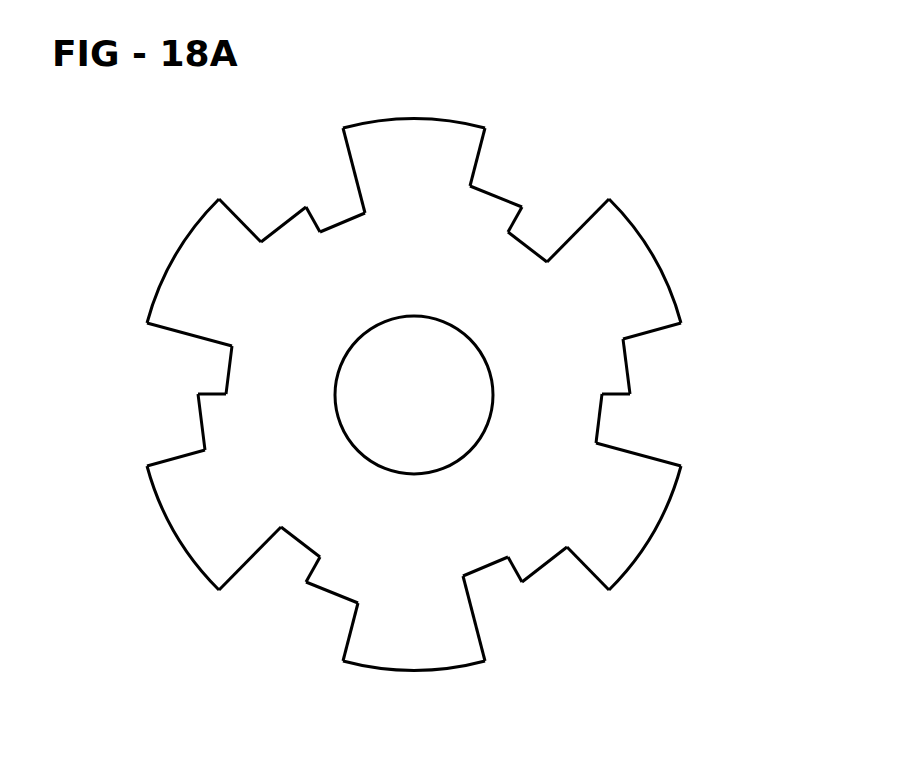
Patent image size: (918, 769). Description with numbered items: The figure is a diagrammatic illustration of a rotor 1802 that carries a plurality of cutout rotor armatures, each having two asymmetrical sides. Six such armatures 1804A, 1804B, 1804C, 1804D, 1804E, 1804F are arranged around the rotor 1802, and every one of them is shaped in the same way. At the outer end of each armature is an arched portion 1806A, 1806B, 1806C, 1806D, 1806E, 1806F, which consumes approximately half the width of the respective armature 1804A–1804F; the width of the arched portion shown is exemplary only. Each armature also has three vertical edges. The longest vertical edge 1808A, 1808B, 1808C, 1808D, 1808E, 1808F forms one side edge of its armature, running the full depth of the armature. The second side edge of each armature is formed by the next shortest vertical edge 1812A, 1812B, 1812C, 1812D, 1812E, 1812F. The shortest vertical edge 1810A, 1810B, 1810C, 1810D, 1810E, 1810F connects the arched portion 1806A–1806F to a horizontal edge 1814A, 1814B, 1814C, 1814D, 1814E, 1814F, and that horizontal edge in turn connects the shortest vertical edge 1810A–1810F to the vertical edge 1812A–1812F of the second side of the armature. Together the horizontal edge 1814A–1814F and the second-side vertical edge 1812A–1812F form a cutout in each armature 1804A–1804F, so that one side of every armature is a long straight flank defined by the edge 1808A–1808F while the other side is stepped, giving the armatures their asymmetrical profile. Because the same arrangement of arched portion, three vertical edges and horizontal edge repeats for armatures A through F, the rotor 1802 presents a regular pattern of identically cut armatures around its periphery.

The rotor 1802 is at (533, 243).
The armature 1804A is at (686, 271).
The arched portion 1806A is at (667, 247).
The longest vertical edge 1808A is at (587, 223).
The shortest vertical edge 1810A is at (663, 328).
The next shortest vertical edge 1812A is at (608, 395).
The horizontal edge 1814A is at (633, 377).
The armature 1804B is at (656, 549).
The arched portion 1806B is at (667, 508).
The longest vertical edge 1808B is at (637, 452).
The shortest vertical edge 1810B is at (648, 545).
The next shortest vertical edge 1812B is at (516, 572).
The horizontal edge 1814B is at (600, 577).
The armature 1804C is at (425, 651).
The arched portion 1806C is at (427, 668).
The longest vertical edge 1808C is at (483, 627).
The shortest vertical edge 1810C is at (347, 642).
The next shortest vertical edge 1812C is at (316, 558).
The horizontal edge 1814C is at (337, 594).
The armature 1804D is at (158, 505).
The arched portion 1806D is at (150, 498).
The longest vertical edge 1808D is at (243, 565).
The shortest vertical edge 1810D is at (165, 465).
The next shortest vertical edge 1812D is at (207, 392).
The horizontal edge 1814D is at (198, 432).
The armature 1804E is at (175, 223).
The arched portion 1806E is at (163, 268).
The longest vertical edge 1808E is at (177, 331).
The shortest vertical edge 1810E is at (233, 210).
The next shortest vertical edge 1812E is at (305, 212).
The horizontal edge 1814E is at (275, 225).
The armature 1804F is at (508, 127).
The arched portion 1806F is at (440, 117).
The longest vertical edge 1808F is at (348, 163).
The shortest vertical edge 1810F is at (485, 140).
The next shortest vertical edge 1812F is at (522, 207).
The horizontal edge 1814F is at (488, 190).